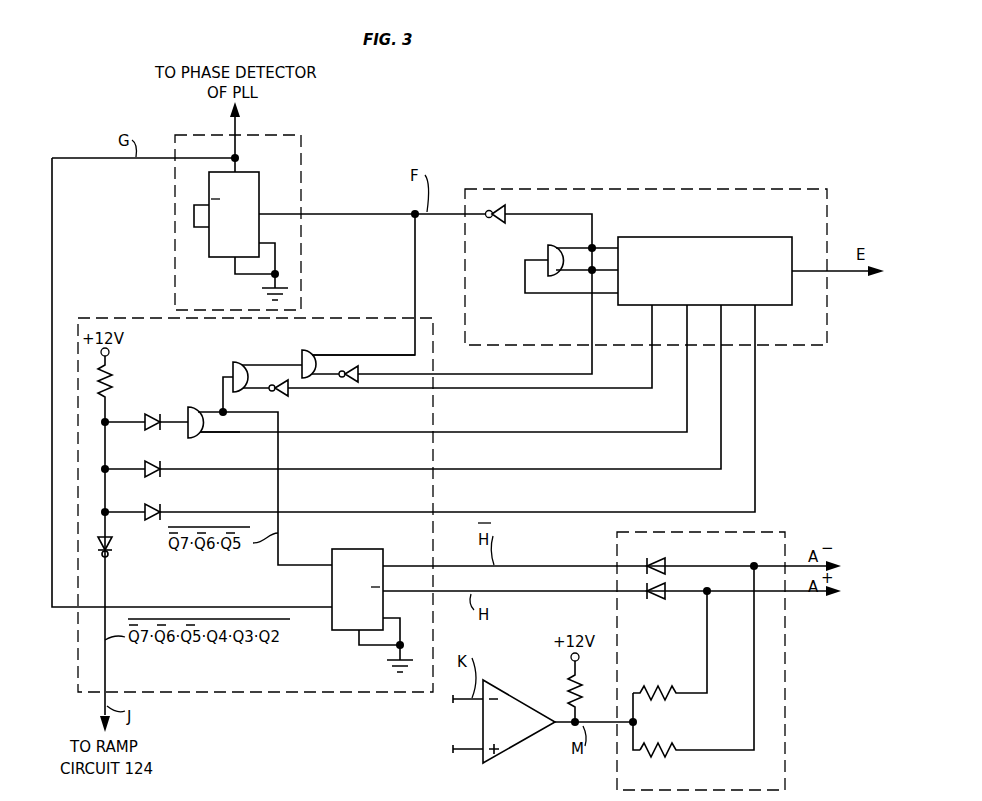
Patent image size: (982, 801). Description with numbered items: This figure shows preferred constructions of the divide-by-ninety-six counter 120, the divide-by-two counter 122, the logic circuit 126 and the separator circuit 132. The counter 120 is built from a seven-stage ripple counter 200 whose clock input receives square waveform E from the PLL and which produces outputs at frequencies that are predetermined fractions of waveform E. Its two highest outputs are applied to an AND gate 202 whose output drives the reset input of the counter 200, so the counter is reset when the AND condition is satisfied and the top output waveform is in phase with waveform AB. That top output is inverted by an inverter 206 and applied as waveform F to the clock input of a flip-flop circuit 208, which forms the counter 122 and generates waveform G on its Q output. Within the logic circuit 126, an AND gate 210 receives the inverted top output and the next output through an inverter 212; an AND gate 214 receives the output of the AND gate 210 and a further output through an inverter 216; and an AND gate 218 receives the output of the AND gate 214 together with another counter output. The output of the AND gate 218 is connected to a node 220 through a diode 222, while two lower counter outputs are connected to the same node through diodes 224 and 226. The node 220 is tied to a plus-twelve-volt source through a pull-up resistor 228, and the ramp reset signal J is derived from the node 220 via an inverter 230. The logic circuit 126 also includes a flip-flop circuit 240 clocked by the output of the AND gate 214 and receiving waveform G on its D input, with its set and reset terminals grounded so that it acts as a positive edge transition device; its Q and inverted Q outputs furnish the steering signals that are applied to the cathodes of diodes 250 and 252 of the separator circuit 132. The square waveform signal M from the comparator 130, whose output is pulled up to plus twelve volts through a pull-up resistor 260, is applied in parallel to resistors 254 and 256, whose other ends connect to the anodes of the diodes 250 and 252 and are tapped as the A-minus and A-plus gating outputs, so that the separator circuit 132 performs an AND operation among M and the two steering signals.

The divide-by-96 counter 120 is at (813, 187).
The divide-by-2 counter 122 is at (300, 160).
The logic circuit 126 is at (115, 317).
The comparator 130 is at (512, 698).
The separator circuit 132 is at (788, 678).
The 7-stage ripple counter 200 is at (786, 237).
The AND gate 202 is at (548, 249).
The inverter 206 is at (495, 210).
The flip-flop circuit 208 is at (259, 194).
The AND gate 210 is at (304, 350).
The inverter 212 is at (358, 384).
The AND gate 214 is at (241, 362).
The inverter 216 is at (288, 394).
The AND gate 218 is at (190, 408).
The node 220 is at (105, 448).
The diode 222 is at (153, 412).
The diode 224 is at (158, 461).
The diode 226 is at (158, 504).
The pull-up resistor 228 is at (113, 377).
The inverter 230 is at (112, 553).
The flip-flop circuit 240 is at (376, 549).
The diode 250 is at (662, 557).
The diode 252 is at (665, 599).
The resistor 254 is at (663, 685).
The resistor 256 is at (676, 755).
The pull-up resistor 260 is at (572, 672).